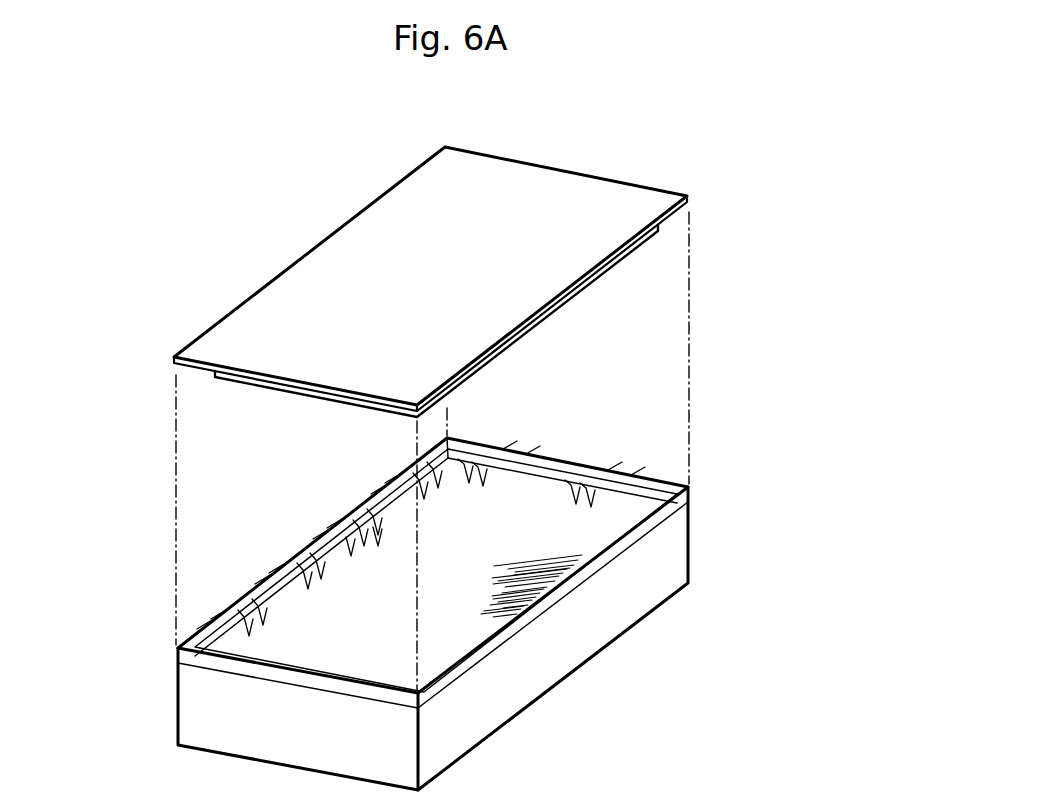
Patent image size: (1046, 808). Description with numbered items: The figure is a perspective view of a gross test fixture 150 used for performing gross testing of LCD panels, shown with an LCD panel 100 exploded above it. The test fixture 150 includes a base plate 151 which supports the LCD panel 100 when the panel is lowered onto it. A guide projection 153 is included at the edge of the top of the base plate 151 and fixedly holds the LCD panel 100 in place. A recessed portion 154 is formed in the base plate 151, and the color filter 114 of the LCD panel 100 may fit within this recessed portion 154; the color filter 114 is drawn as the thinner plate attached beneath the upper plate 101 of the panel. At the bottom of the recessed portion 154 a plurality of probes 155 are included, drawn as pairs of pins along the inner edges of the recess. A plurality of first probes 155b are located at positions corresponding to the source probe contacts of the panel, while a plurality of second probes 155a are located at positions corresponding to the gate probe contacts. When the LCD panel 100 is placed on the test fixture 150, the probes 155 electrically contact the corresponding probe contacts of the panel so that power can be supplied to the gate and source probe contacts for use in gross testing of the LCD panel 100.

The LCD panel 100 is at (178, 240).
The cover plate 101 is at (540, 185).
The color filter 114 is at (598, 283).
The gross test fixture 150 is at (142, 565).
The base plate 151 is at (597, 620).
The guide projection 153 is at (640, 524).
The recessed portion 154 is at (443, 637).
The probes 155 is at (602, 500).
The second probes 155a is at (350, 534).
The first probes 155b is at (378, 524).